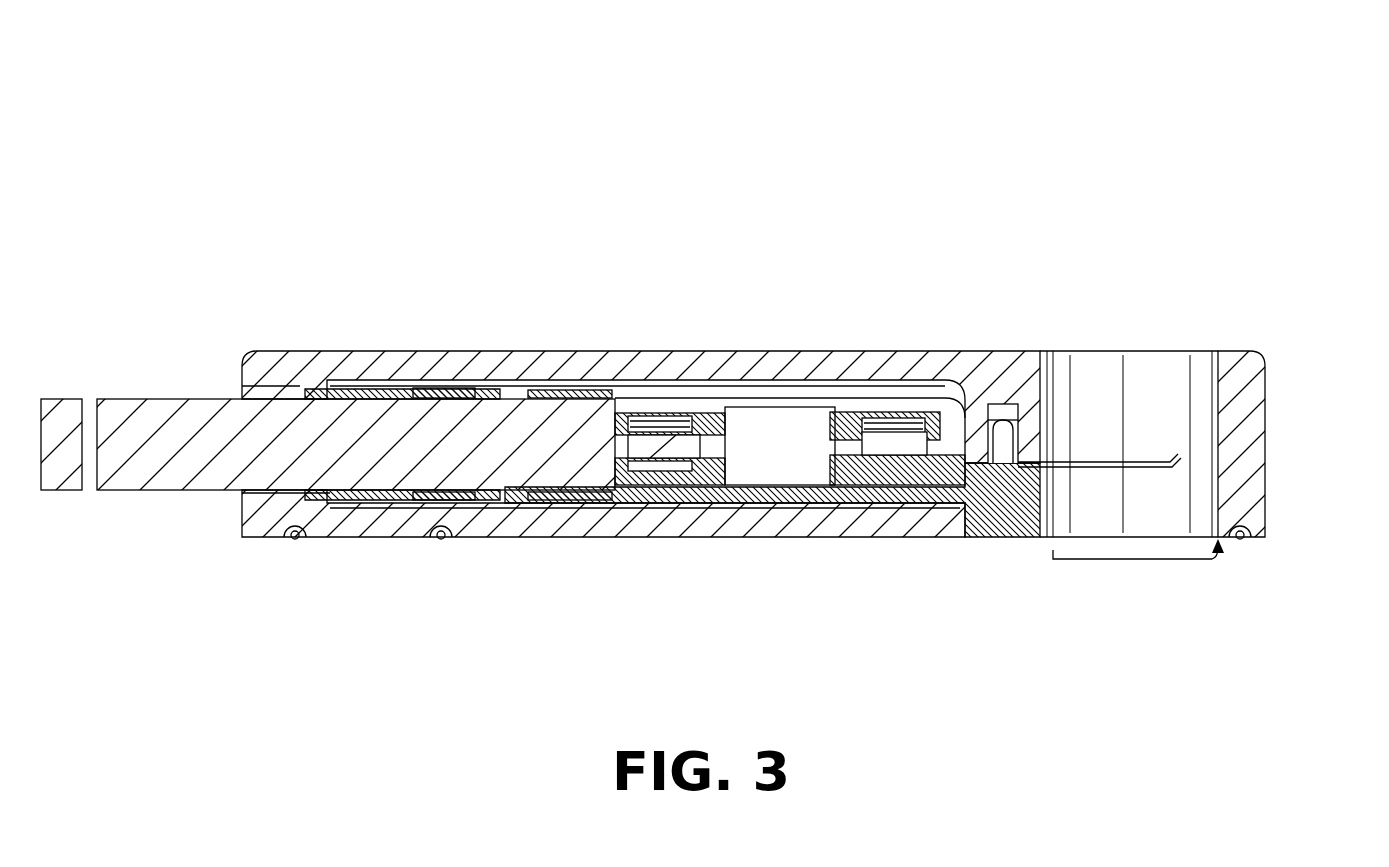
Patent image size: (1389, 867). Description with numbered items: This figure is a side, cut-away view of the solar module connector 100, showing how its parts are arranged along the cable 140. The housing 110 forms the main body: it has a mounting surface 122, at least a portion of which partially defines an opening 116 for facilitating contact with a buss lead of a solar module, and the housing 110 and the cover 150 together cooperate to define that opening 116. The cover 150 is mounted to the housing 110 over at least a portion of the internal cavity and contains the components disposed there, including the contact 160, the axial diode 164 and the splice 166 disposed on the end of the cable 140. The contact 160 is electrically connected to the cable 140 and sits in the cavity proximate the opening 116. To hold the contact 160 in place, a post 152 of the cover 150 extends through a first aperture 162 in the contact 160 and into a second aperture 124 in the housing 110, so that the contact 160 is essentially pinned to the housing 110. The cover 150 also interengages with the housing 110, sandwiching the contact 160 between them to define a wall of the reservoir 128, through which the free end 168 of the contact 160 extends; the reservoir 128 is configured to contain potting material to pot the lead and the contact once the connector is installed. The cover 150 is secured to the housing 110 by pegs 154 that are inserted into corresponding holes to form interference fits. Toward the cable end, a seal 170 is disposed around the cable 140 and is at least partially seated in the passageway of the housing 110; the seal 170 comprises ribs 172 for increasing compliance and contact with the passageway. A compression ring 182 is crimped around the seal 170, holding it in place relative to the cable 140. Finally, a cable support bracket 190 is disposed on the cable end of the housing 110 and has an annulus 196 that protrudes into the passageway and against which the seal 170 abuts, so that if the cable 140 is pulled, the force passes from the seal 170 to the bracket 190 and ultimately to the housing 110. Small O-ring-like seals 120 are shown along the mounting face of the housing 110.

The solar module connector 100 is at (166, 128).
The housing 110 is at (464, 362).
The opening 116 is at (1145, 548).
The O-ring seal 120 is at (298, 540).
The mounting surface 122 is at (349, 553).
The second aperture 124 is at (1000, 412).
The reservoir 128 is at (1147, 392).
The cable 140 is at (165, 458).
The cover 150 is at (787, 520).
The post 152 is at (1003, 440).
The pegs 154 is at (850, 420).
The contact 160 is at (1090, 460).
The first aperture 162 is at (988, 458).
The axial diode 164 is at (780, 435).
The splice 166 is at (655, 420).
The free end 168 is at (1178, 455).
The seal 170 is at (337, 372).
The ribs 172 is at (288, 372).
The compression ring 182 is at (558, 384).
The cable support bracket 190 is at (243, 513).
The annulus 196 is at (300, 392).